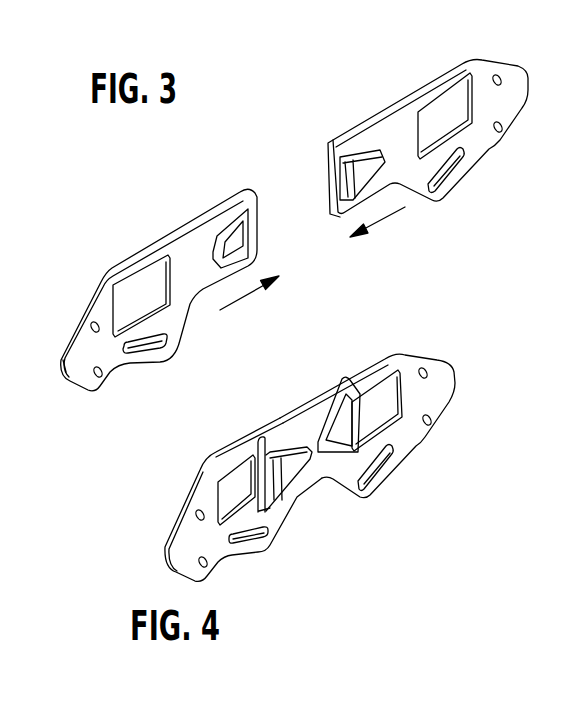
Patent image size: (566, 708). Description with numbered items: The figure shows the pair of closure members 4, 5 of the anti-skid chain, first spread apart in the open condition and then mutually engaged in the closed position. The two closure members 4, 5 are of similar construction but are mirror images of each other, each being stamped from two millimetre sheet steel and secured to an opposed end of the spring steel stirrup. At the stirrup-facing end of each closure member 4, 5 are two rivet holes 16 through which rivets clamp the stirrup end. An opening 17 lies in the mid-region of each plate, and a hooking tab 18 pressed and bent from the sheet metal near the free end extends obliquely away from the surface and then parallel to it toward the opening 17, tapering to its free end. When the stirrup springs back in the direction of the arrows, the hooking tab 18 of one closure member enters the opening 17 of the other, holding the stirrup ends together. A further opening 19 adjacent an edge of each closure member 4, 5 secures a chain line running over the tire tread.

In FIG. 3, the closure member 4 is at (130, 222).
In FIG. 4, the closure member 4 is at (210, 493).
In FIG. 3, the closure member 5 is at (362, 98).
In FIG. 4, the closure member 5 is at (412, 362).
In FIG. 3, the rivet holes 16 is at (93, 370).
In FIG. 4, the rivet holes 16 is at (313, 467).
In FIG. 3, the opening 17 is at (133, 292).
In FIG. 4, the opening 17 is at (242, 477).
In FIG. 3, the hooking tab 18 is at (357, 160).
In FIG. 4, the hooking tab 18 is at (340, 432).
In FIG. 3, the opening 19 is at (142, 343).
In FIG. 4, the opening 19 is at (368, 473).